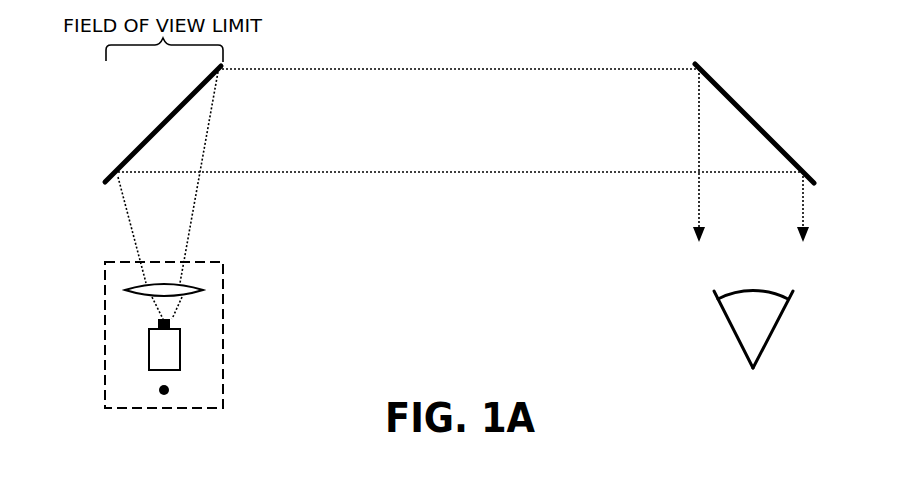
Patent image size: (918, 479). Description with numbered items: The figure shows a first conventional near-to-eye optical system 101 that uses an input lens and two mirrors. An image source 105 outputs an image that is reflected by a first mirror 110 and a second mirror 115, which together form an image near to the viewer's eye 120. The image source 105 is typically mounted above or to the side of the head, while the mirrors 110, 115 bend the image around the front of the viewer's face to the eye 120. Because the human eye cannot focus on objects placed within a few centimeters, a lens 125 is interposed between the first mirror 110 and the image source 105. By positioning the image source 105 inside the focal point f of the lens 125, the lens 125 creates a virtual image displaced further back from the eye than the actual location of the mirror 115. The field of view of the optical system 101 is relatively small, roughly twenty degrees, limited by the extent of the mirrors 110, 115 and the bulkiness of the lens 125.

The near-to-eye optical system 101 is at (467, 238).
The image source 105 is at (150, 348).
The first mirror 110 is at (123, 158).
The second mirror 115 is at (765, 130).
The eye 120 is at (772, 336).
The lens 125 is at (130, 288).